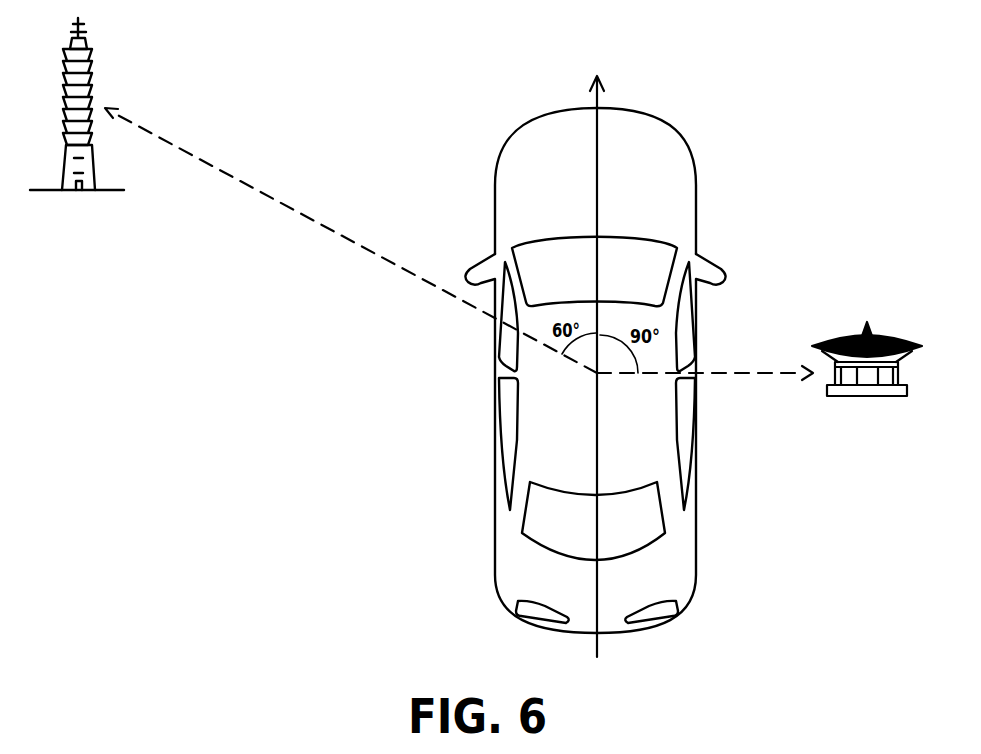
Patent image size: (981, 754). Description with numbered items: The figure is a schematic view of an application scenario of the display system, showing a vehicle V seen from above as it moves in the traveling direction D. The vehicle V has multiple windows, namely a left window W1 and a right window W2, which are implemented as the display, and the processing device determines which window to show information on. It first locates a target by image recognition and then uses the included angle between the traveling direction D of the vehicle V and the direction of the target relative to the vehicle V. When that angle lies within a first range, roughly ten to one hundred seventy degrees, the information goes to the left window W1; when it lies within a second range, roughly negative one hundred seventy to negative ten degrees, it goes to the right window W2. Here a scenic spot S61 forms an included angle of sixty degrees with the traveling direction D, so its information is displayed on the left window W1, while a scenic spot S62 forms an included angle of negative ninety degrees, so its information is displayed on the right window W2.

The vehicle V is at (602, 370).
The traveling direction D is at (599, 354).
The left window W1 is at (508, 343).
The right window W2 is at (678, 353).
The scenic spot S61 is at (92, 68).
The scenic spot S62 is at (890, 342).